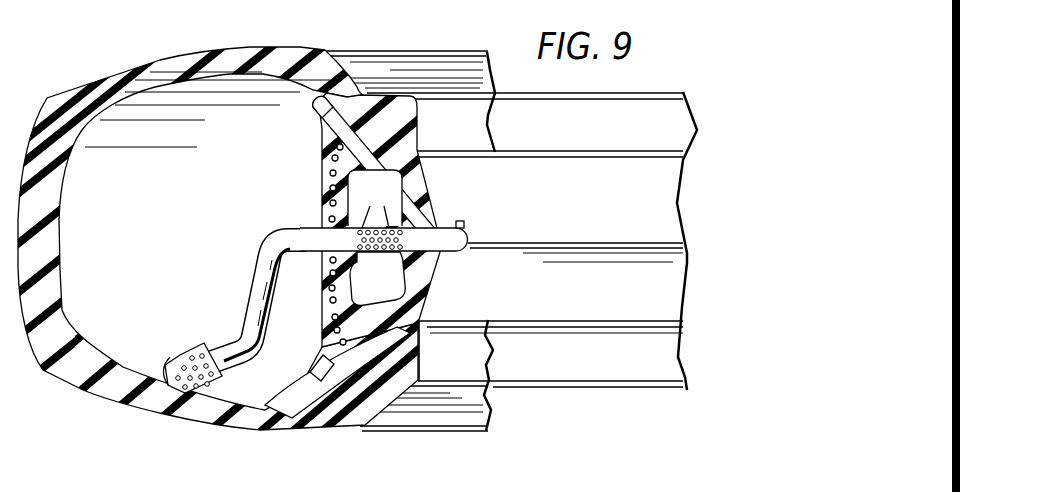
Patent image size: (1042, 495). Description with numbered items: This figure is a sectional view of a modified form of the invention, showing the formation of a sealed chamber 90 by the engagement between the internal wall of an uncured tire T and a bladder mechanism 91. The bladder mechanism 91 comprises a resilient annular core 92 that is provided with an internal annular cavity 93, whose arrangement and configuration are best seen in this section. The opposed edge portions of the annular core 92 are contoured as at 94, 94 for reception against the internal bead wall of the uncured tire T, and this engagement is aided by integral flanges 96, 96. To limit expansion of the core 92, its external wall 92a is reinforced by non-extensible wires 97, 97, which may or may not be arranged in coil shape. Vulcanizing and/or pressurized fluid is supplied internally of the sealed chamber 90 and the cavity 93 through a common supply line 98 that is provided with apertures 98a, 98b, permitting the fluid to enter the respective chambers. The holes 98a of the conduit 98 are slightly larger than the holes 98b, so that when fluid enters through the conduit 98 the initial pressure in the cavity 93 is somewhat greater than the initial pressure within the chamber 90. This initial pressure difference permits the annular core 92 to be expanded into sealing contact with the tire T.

The uncured tire T is at (168, 62).
The sealed chamber 90 is at (108, 342).
The bladder mechanism 91 is at (441, 193).
The resilient annular core 92 is at (427, 282).
The external wall 92a is at (318, 315).
The internal annular cavity 93 is at (377, 278).
The contoured edge portion 94 is at (367, 162).
The integral flange 96 is at (322, 104).
The non-extensible wire 97 is at (330, 188).
The common supply line 98 is at (455, 230).
The apertures 98a is at (375, 209).
The apertures 98b is at (196, 364).